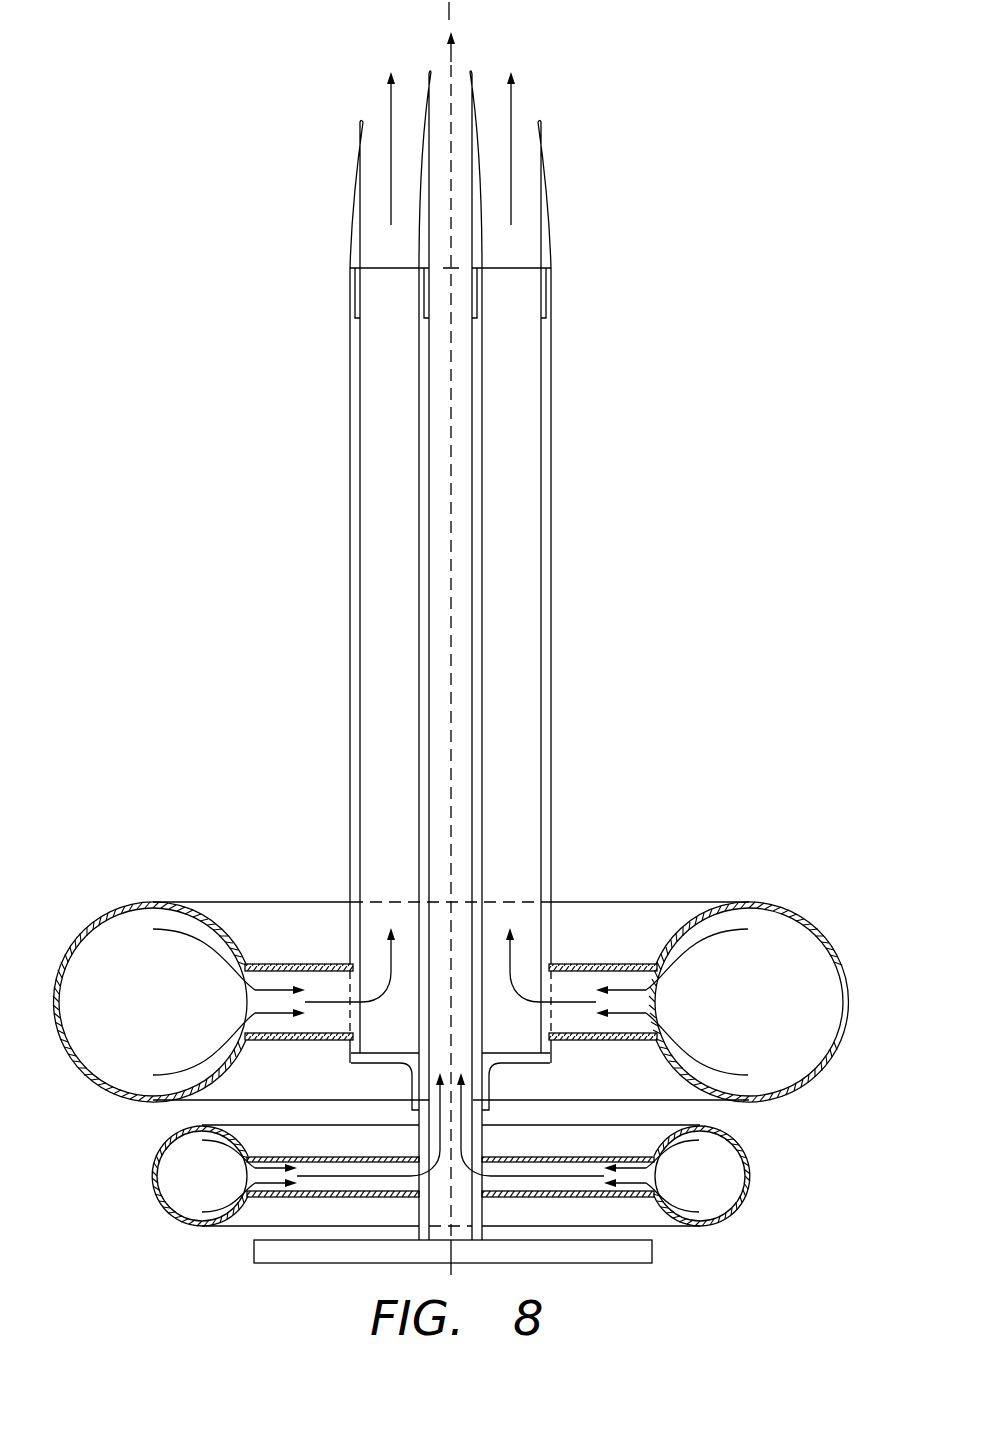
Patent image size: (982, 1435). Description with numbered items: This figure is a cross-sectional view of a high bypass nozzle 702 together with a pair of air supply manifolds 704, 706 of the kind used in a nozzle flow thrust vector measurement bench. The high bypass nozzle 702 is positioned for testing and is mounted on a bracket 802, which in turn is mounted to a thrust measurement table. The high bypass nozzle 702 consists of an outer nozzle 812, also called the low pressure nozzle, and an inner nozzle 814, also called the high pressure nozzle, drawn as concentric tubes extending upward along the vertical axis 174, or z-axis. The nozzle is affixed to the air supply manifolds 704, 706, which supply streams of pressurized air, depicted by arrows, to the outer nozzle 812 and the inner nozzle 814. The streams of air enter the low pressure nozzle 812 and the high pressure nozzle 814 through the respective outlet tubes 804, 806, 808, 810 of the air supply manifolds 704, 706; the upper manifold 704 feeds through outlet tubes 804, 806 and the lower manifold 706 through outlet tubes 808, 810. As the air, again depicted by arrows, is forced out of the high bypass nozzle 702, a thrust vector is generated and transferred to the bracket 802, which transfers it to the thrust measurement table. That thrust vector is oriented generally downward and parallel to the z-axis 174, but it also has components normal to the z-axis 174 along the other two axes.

The vertical axis 174 is at (452, 10).
The high bypass nozzle 702 is at (459, 655).
The air supply manifold 704 is at (818, 928).
The air supply manifold 706 is at (740, 1148).
The bracket 802 is at (652, 1243).
The outlet tube 804 is at (296, 964).
The outlet tube 806 is at (606, 964).
The outlet tube 808 is at (323, 1157).
The outlet tube 810 is at (546, 1157).
The outer nozzle 812 is at (350, 472).
The inner nozzle 814 is at (482, 452).